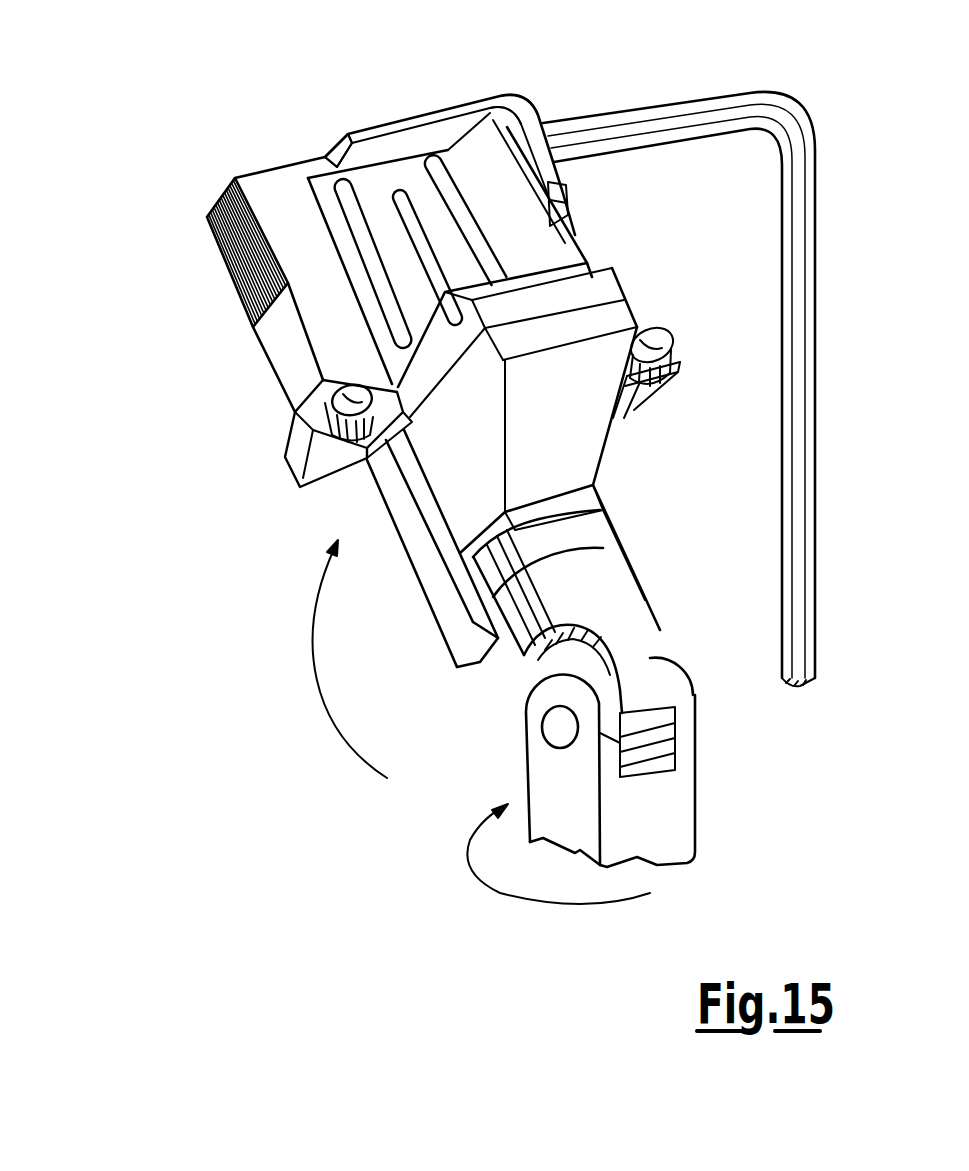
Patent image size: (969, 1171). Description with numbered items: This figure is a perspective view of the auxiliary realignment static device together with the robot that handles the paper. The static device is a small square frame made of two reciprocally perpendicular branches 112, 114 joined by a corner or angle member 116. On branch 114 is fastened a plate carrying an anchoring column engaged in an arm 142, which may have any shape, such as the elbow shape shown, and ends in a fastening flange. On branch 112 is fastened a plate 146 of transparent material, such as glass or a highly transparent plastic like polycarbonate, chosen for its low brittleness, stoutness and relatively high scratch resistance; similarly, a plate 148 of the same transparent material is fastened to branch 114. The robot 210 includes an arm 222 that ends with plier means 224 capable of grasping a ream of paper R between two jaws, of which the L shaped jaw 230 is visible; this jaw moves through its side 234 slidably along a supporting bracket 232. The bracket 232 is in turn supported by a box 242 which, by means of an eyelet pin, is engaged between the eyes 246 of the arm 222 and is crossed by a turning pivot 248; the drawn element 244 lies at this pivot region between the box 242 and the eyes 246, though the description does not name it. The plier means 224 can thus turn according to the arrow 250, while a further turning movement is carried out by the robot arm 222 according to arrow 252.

The ream of paper R is at (224, 185).
The branch 112 is at (458, 100).
The branch 114 is at (545, 124).
The corner angle member 116 is at (526, 93).
The arm 142 is at (685, 128).
The transparent plate 146 is at (370, 127).
The transparent plate 148 is at (560, 203).
The robot 210 is at (250, 445).
The robot arm 222 is at (657, 820).
The plier means 224 is at (335, 498).
The L shaped jaw 230 is at (400, 175).
The supporting bracket 232 is at (595, 285).
The side 234 is at (540, 277).
The box 242 is at (603, 440).
The cylindrical pivot member 244 is at (590, 573).
The eyes 246 is at (690, 690).
The turning pivot 248 is at (553, 723).
The arrow 250 is at (318, 676).
The arrow 252 is at (500, 893).